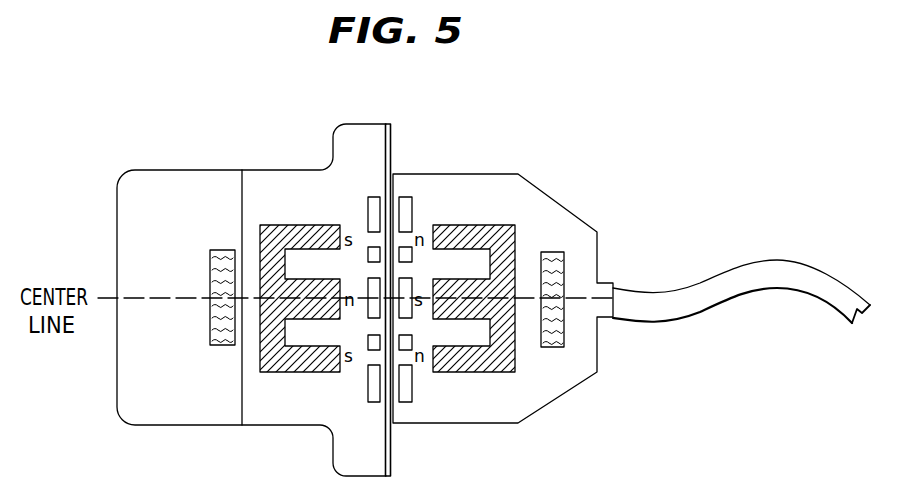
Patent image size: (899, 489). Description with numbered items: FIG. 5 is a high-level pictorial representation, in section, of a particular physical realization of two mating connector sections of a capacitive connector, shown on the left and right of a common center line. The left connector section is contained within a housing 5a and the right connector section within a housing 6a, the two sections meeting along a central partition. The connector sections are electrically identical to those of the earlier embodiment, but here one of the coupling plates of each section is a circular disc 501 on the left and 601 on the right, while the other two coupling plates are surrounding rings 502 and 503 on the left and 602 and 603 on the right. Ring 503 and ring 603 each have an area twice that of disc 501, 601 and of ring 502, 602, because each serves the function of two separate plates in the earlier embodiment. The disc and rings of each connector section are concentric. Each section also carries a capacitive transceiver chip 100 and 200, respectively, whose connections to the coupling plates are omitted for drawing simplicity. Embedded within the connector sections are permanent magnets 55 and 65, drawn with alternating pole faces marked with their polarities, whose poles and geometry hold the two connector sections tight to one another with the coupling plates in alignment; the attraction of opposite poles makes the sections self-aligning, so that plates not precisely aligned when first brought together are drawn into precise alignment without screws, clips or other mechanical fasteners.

The first housing 5a is at (280, 172).
The second housing 6a is at (478, 174).
The permanent magnet 55 is at (273, 224).
The permanent magnet 65 is at (503, 227).
The capacitive transceiver chip 100 is at (223, 250).
The capacitive transceiver chip 200 is at (553, 252).
The circular disc 501 is at (367, 287).
The ring 502 is at (367, 343).
The ring 503 is at (368, 383).
The circular disc 601 is at (445, 227).
The ring 602 is at (412, 345).
The ring 603 is at (412, 387).